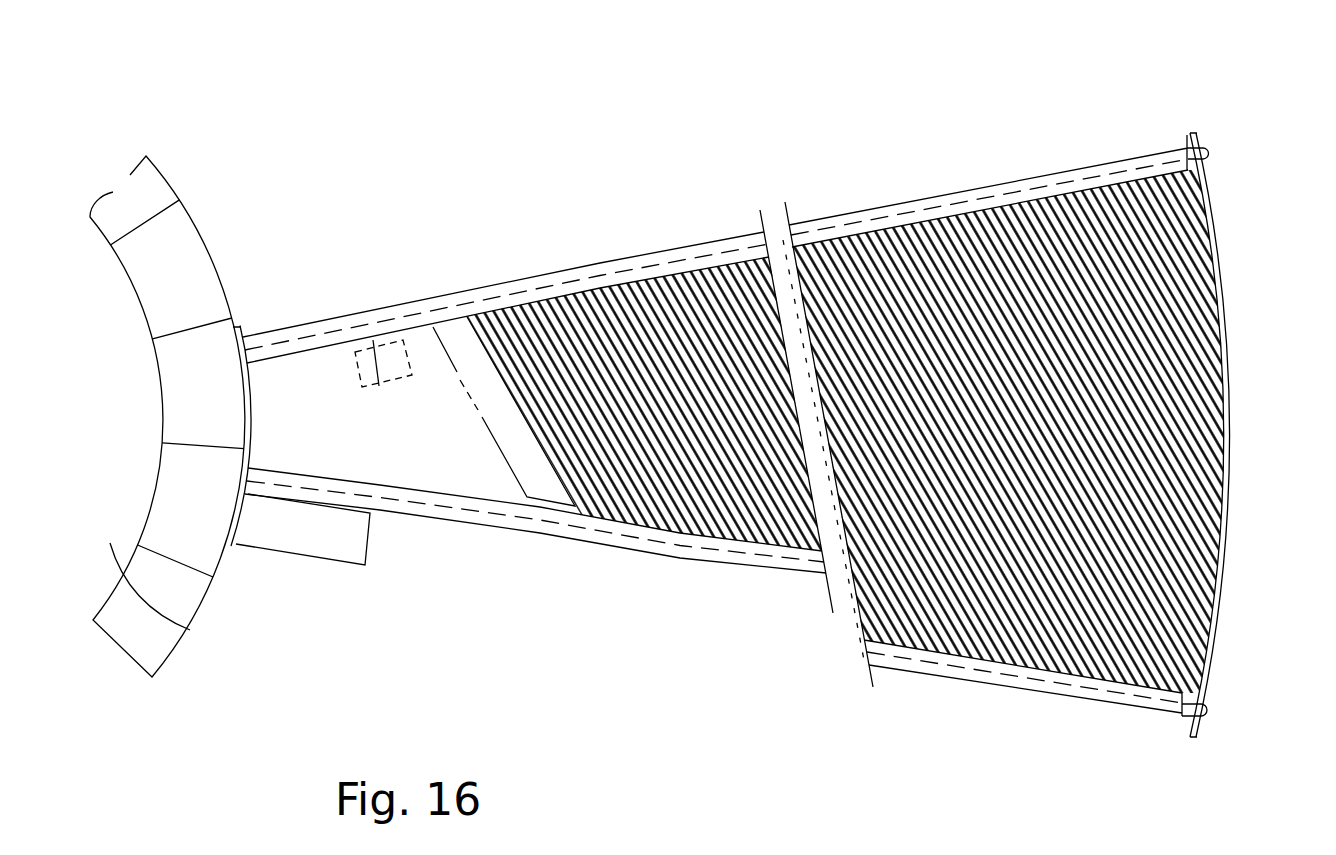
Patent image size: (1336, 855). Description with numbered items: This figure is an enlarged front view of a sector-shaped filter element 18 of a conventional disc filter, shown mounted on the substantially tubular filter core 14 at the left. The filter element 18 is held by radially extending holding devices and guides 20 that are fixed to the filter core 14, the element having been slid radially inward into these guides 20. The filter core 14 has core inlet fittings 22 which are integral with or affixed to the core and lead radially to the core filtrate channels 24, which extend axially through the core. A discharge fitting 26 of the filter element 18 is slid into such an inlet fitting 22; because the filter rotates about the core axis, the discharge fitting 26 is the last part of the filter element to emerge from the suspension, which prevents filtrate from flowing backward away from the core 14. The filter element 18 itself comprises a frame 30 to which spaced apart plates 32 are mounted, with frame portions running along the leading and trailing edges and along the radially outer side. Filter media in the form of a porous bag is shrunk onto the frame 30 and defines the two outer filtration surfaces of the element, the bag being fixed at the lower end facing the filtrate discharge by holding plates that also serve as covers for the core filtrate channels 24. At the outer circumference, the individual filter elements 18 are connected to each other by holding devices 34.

The filter core 14 is at (187, 630).
The filter element 18 is at (1043, 91).
The holding devices and guides 20 is at (552, 282).
The core inlet fittings 22 is at (318, 368).
The core filtrate channels 24 is at (214, 294).
The discharge fitting 26 is at (397, 350).
The frame 30 is at (848, 228).
The plates 32 is at (748, 500).
The holding devices 34 is at (1223, 282).